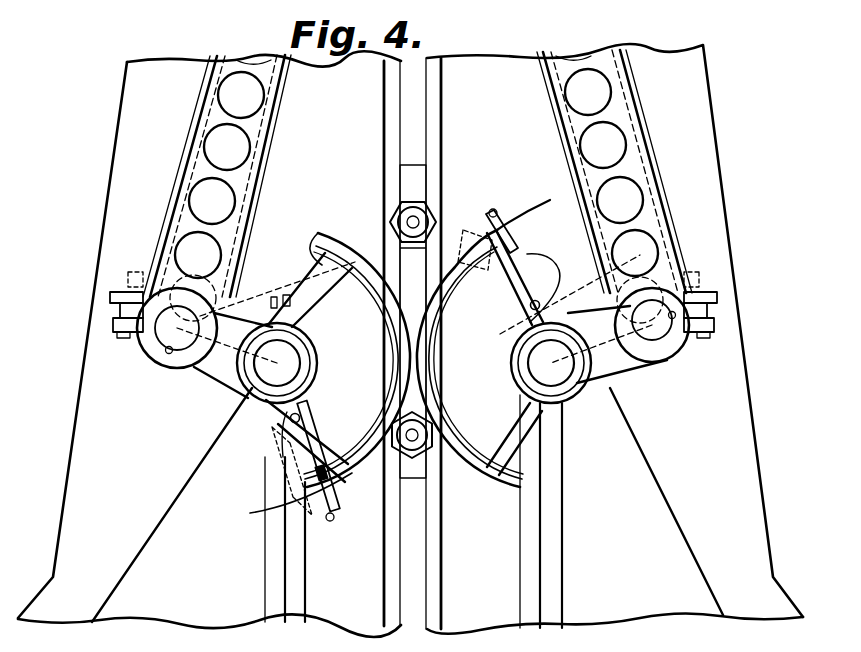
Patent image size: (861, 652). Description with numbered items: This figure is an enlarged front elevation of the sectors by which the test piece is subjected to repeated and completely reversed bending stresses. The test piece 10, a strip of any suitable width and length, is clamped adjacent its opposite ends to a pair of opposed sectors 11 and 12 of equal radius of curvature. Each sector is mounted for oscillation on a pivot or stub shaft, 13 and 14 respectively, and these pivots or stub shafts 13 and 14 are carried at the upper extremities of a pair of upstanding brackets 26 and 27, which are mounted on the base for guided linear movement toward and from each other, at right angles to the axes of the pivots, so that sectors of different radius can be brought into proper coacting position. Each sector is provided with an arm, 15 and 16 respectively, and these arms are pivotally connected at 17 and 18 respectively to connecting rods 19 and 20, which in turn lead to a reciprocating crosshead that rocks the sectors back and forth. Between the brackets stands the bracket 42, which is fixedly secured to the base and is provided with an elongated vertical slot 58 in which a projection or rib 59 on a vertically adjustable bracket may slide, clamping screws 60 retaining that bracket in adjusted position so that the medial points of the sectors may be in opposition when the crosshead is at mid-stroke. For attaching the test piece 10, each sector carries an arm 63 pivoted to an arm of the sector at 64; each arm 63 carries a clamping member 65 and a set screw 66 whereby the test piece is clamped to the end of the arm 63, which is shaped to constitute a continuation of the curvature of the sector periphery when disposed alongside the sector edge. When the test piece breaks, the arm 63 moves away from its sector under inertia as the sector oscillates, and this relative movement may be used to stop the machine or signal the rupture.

The test piece 10 is at (545, 210).
The sector 11 is at (400, 323).
The sector 12 is at (418, 364).
The pivot or stub shaft 13 is at (263, 376).
The pivot or stub shaft 14 is at (566, 378).
The arm 15 is at (197, 376).
The arm 16 is at (640, 378).
The pivotal connection 17 is at (166, 340).
The pivotal connection 18 is at (665, 342).
The connecting rod 19 is at (190, 148).
The connecting rod 20 is at (636, 126).
The upstanding bracket 26 is at (147, 542).
The upstanding bracket 27 is at (668, 520).
The bracket 42 is at (92, 428).
The elongated vertical slot 58 is at (435, 104).
The projection or rib 59 is at (414, 262).
The clamping screw 60 is at (397, 215).
The arm 63 is at (282, 457).
The pivot 64 is at (300, 416).
The clamping member 65 is at (341, 495).
The set screw 66 is at (331, 515).